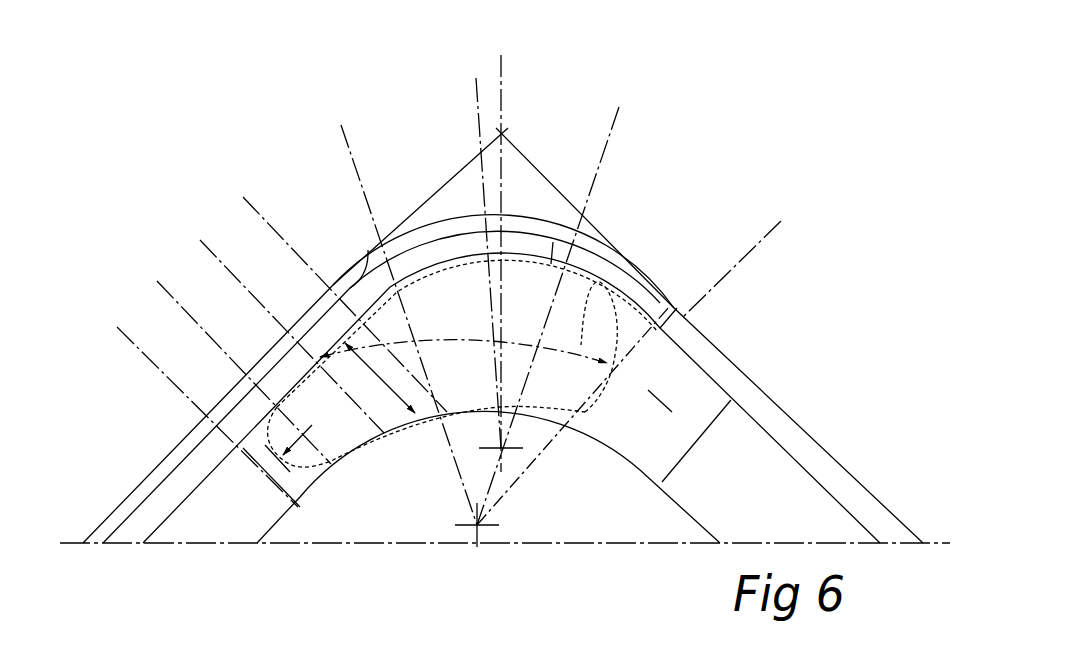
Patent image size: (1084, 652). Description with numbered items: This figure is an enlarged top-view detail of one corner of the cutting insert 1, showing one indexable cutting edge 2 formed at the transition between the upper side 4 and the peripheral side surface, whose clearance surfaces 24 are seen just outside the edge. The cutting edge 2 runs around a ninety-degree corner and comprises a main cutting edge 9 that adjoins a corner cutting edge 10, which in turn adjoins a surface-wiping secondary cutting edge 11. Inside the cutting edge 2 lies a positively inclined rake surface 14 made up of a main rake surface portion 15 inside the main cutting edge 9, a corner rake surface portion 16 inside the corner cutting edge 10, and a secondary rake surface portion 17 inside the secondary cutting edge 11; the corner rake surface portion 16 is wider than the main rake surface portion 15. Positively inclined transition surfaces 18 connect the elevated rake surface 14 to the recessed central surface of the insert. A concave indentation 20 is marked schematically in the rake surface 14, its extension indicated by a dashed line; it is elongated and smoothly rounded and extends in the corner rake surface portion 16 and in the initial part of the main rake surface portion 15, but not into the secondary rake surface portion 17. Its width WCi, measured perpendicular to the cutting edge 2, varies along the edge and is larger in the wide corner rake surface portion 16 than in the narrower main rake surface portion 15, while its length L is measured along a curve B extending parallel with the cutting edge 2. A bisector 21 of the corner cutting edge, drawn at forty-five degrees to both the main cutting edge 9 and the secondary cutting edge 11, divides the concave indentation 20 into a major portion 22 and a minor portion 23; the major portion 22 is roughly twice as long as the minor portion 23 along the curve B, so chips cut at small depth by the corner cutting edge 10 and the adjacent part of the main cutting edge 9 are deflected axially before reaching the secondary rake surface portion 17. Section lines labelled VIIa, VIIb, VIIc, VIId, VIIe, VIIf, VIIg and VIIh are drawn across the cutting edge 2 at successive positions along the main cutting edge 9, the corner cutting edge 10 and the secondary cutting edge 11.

The cutting insert 1 is at (236, 106).
The indexable cutting edge 2 is at (200, 445).
The upper side 4 is at (547, 515).
The main cutting edge 9 is at (284, 358).
The corner cutting edge 10 is at (455, 238).
The surface-wiping secondary cutting edge 11 is at (700, 332).
The rake surface 14 is at (243, 528).
The main rake surface portion 15 is at (361, 433).
The corner rake surface portion 16 is at (483, 323).
The secondary rake surface portion 17 is at (759, 503).
The transition surface 18 is at (613, 498).
The concave indentation 20 is at (518, 270).
The bisector 21 is at (502, 82).
The major portion 22 is at (388, 410).
The minor portion 23 is at (590, 323).
The clearance surface 24 is at (120, 512).
The length of the concave indentation L is at (517, 340).
The curve parallel with the cutting edge B is at (650, 392).
The width of the concave indentation WCi is at (386, 386).
The section line VIIa is at (127, 337).
The section line VIIb is at (167, 291).
The section line VIIc is at (210, 250).
The section line VIId is at (253, 207).
The section line VIIe is at (347, 142).
The section line VIIf is at (478, 92).
The section line VIIg is at (613, 124).
The section line VIIh is at (767, 235).